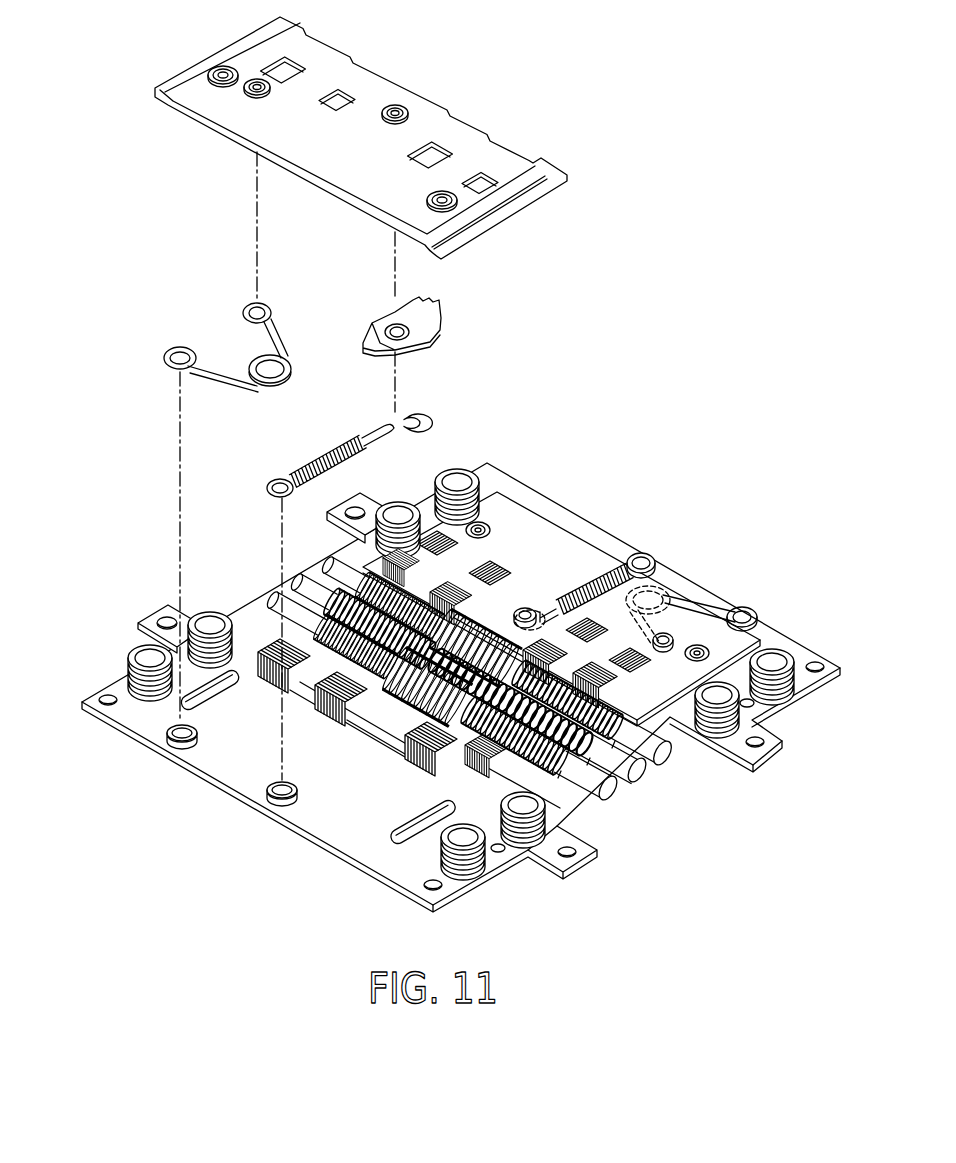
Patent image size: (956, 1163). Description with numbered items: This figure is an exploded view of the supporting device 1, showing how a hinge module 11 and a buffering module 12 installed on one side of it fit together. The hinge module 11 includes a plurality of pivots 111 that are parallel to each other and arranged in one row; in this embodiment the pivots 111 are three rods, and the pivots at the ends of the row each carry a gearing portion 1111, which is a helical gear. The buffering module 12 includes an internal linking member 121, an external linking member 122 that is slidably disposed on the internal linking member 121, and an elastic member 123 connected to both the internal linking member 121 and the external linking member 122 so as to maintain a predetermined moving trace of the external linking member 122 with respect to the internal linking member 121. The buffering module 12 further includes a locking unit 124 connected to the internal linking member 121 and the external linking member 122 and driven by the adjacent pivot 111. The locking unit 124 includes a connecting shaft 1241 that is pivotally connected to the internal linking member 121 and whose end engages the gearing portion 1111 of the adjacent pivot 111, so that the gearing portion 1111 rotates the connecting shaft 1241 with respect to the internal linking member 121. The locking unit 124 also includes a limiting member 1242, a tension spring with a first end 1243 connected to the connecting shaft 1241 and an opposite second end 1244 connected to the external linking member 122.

The supporting device 1 is at (859, 47).
The hinge module 11 is at (678, 769).
The pivots 111 is at (662, 762).
The gearing portion 1111 is at (414, 688).
The buffering module 12 is at (698, 575).
The internal linking member 121 is at (206, 53).
The external linking member 122 is at (104, 681).
The elastic member 123 is at (160, 342).
The locking unit 124 is at (570, 318).
The connecting shaft 1241 is at (452, 327).
The limiting member 1242 is at (418, 425).
The first end 1243 is at (412, 436).
The second end 1244 is at (279, 479).